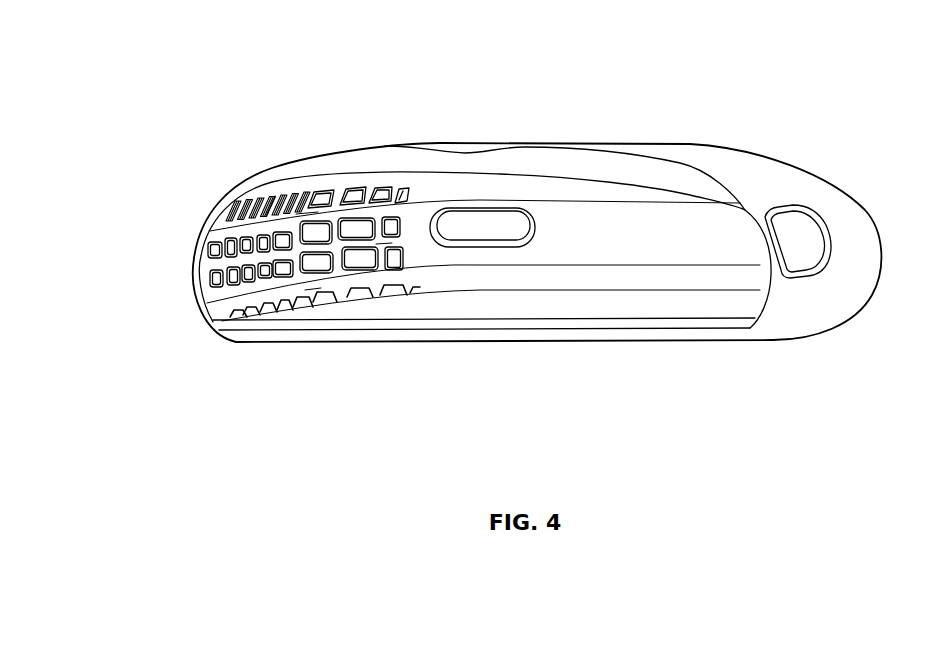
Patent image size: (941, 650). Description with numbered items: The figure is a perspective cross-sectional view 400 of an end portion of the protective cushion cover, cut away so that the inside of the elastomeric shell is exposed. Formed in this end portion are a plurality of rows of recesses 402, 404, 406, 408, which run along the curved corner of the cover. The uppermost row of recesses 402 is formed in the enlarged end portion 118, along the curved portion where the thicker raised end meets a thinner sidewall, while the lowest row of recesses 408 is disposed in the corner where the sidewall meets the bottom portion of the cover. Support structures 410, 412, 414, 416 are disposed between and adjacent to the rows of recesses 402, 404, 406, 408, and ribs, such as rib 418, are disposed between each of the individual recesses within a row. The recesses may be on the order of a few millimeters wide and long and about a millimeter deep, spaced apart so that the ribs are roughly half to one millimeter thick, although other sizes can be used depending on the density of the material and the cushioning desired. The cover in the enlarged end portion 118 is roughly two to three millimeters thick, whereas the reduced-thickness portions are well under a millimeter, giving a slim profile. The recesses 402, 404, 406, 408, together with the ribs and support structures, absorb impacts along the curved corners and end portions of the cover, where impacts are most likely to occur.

The perspective cross-sectional view 400 is at (615, 66).
The enlarged end portion 118 is at (647, 157).
The recesses 402 is at (219, 212).
The recesses 404 is at (184, 253).
The recesses 406 is at (188, 291).
The recesses 408 is at (216, 323).
The support structure 410 is at (345, 193).
The support structure 412 is at (307, 218).
The support structure 414 is at (380, 243).
The support structure 416 is at (313, 288).
The rib 418 is at (275, 230).